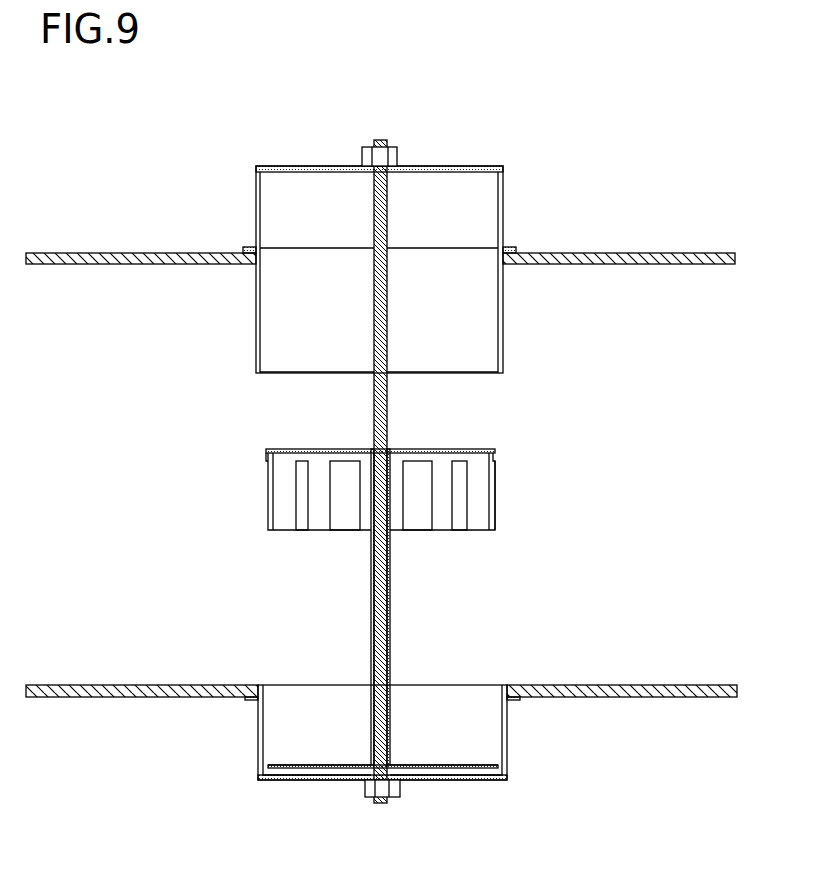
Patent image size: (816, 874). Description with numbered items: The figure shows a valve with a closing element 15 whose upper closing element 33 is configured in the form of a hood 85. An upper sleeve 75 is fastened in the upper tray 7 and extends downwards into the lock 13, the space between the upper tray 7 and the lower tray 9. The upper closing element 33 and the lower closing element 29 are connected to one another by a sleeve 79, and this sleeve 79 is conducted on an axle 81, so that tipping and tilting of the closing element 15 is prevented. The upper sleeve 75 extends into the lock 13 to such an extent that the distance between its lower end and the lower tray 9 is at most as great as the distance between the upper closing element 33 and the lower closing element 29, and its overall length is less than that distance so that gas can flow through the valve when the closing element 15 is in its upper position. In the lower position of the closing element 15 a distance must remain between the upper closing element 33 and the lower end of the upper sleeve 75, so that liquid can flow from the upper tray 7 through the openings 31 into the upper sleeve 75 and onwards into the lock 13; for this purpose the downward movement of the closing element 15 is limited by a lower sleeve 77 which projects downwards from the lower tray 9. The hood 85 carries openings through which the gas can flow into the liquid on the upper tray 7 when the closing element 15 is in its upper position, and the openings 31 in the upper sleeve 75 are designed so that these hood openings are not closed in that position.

The upper tray 7 is at (620, 256).
The lower tray 9 is at (607, 685).
The lock 13 is at (624, 492).
The closing element 15 is at (329, 575).
The lower closing element 29 is at (303, 770).
The openings 31 is at (272, 205).
The upper closing element 33 is at (300, 449).
The upper sleeve 75 is at (502, 192).
The lower sleeve 77 is at (507, 743).
The sleeve 79 is at (393, 586).
The axle 81 is at (382, 408).
The hood 85 is at (490, 467).